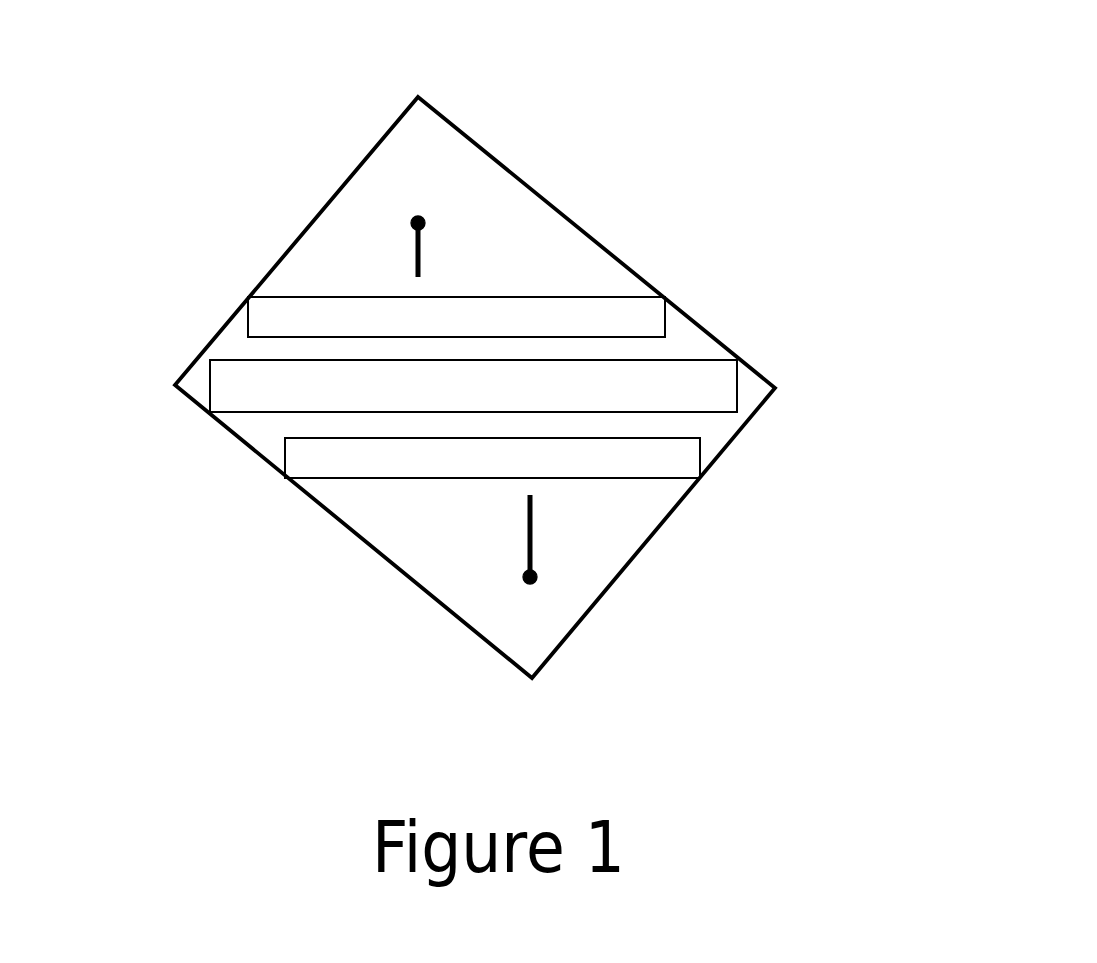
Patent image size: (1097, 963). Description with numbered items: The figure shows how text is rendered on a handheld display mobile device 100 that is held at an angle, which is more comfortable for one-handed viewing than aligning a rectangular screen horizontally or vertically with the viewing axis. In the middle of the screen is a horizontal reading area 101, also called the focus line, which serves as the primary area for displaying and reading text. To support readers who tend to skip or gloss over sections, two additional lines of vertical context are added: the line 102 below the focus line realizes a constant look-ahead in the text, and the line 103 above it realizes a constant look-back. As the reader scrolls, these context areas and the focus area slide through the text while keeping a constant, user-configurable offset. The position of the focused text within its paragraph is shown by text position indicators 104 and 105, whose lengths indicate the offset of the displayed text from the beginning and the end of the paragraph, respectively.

The display mobile device 100 is at (955, 58).
The horizontal reading area 101 is at (698, 349).
The context below line 102 is at (386, 487).
The context above line 103 is at (333, 282).
The text position indicator 104 is at (430, 245).
The text position indicator 105 is at (551, 530).